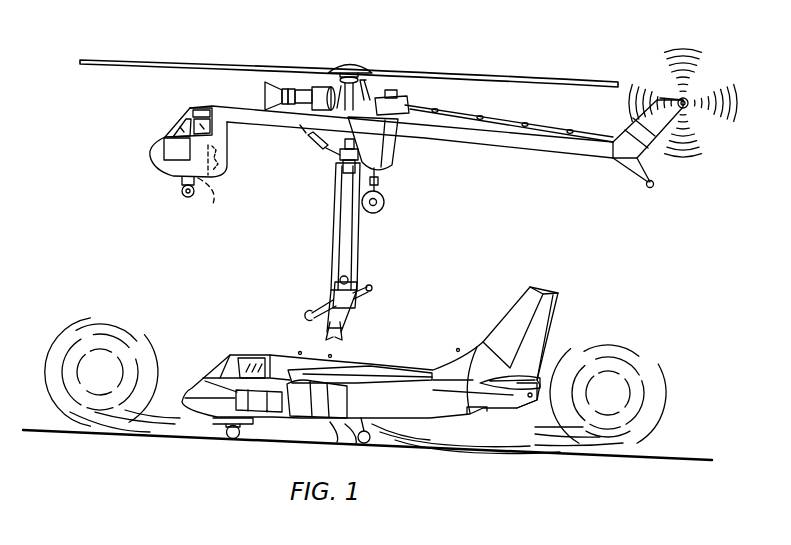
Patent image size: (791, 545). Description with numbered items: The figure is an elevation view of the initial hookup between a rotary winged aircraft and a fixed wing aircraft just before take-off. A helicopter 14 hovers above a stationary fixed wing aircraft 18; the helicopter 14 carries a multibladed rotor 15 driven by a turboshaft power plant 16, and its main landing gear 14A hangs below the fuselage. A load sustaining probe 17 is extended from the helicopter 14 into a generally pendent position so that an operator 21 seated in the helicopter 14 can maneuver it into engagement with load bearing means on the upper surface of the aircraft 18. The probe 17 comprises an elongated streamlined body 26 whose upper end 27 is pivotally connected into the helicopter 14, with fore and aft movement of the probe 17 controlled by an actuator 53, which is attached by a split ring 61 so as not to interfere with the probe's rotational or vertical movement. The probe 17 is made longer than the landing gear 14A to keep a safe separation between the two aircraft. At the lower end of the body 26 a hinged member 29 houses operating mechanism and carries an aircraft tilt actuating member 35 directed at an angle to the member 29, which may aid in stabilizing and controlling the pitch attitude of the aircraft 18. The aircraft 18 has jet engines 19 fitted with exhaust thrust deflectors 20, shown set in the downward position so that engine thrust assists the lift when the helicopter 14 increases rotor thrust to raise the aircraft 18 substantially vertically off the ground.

The helicopter 14 is at (175, 128).
The landing gear 14A is at (382, 172).
The multibladed rotor 15 is at (474, 64).
The turboshaft power plant 16 is at (273, 88).
The load sustaining probe 17 is at (372, 245).
The fixed wing aircraft 18 is at (381, 352).
The jet engine 19 is at (307, 408).
The exhaust thrust deflector 20 is at (370, 395).
The operator 21 is at (226, 222).
The body 26 is at (348, 241).
The upper end 27 is at (338, 172).
The member 29 is at (350, 306).
The aircraft tilt actuating member 35 is at (317, 298).
The actuator 53 is at (318, 145).
The split ring 61 is at (392, 163).